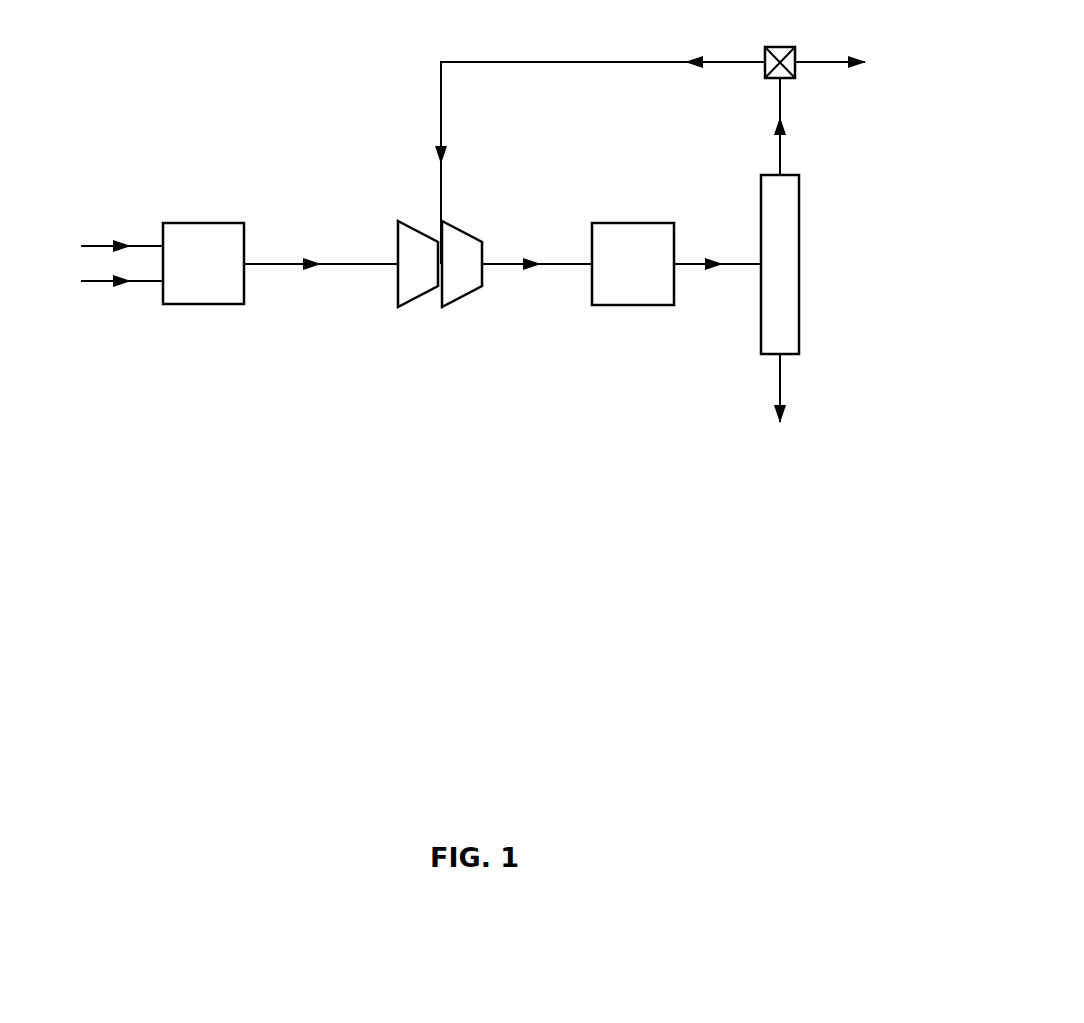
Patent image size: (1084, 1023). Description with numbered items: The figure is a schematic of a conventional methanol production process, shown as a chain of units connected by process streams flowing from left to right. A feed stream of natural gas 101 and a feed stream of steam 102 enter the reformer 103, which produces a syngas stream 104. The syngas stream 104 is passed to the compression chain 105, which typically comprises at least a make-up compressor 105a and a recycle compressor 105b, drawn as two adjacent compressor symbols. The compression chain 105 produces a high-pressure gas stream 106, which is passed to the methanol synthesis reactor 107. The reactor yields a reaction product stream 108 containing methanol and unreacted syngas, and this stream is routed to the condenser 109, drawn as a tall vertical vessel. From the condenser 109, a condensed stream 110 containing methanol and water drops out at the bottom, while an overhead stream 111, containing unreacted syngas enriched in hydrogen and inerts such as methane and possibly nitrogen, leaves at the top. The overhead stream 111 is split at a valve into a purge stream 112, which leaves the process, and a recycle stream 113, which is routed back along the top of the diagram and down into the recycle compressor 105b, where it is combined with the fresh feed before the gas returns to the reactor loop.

The natural gas feed stream 101 is at (122, 232).
The steam feed stream 102 is at (122, 294).
The reformer 103 is at (200, 304).
The syngas stream 104 is at (321, 279).
The compression chain 105 is at (436, 258).
The make-up compressor 105a is at (412, 221).
The recycle compressor 105b is at (467, 221).
The high-pressure gas stream 106 is at (537, 279).
The methanol synthesis reactor 107 is at (632, 305).
The reaction product stream 108 is at (717, 279).
The condenser 109 is at (799, 217).
The condensed stream 110 is at (781, 402).
The overhead stream 111 is at (805, 126).
The purge stream 112 is at (839, 62).
The recycle stream 113 is at (603, 151).